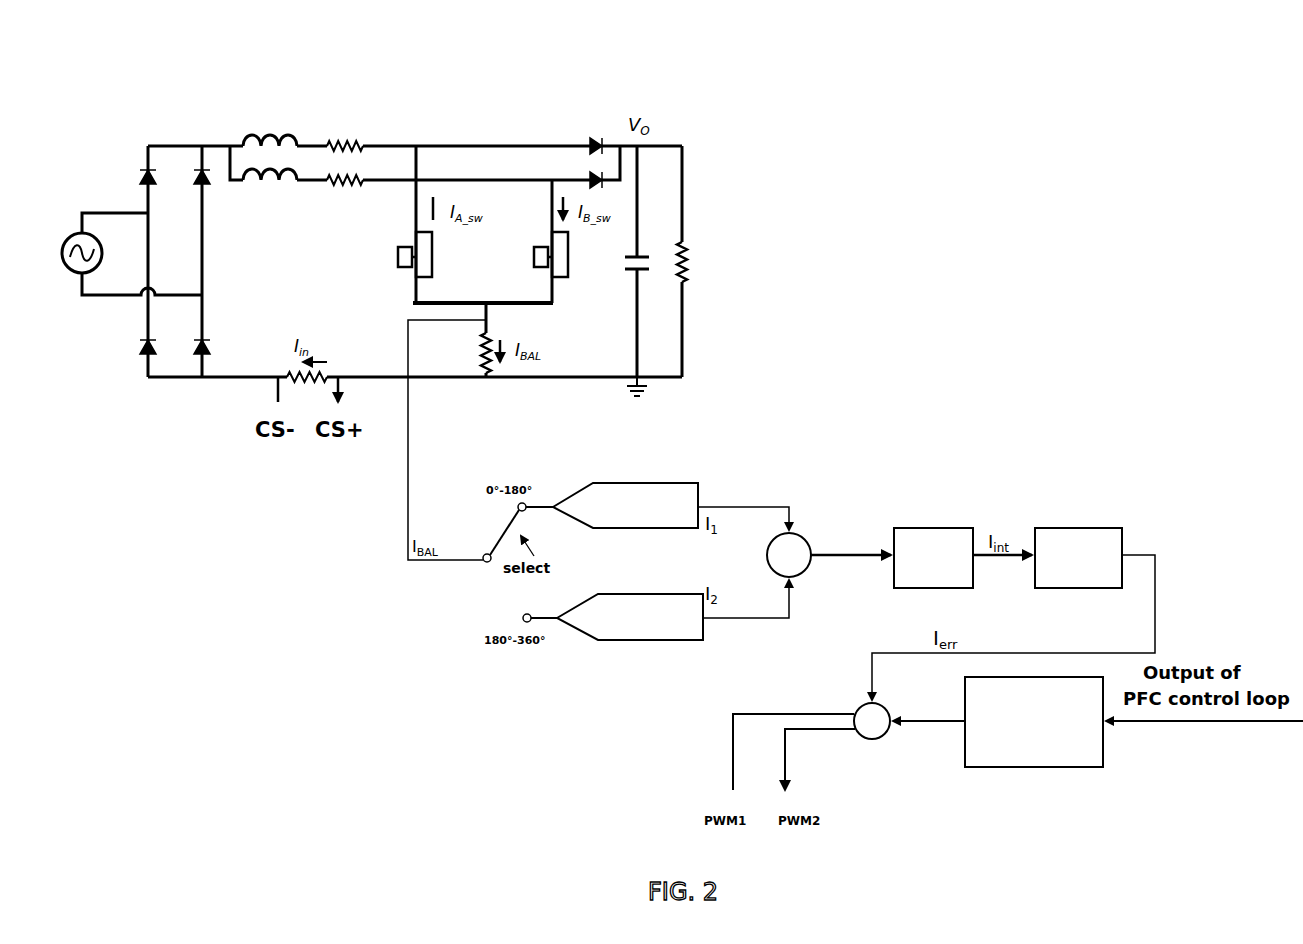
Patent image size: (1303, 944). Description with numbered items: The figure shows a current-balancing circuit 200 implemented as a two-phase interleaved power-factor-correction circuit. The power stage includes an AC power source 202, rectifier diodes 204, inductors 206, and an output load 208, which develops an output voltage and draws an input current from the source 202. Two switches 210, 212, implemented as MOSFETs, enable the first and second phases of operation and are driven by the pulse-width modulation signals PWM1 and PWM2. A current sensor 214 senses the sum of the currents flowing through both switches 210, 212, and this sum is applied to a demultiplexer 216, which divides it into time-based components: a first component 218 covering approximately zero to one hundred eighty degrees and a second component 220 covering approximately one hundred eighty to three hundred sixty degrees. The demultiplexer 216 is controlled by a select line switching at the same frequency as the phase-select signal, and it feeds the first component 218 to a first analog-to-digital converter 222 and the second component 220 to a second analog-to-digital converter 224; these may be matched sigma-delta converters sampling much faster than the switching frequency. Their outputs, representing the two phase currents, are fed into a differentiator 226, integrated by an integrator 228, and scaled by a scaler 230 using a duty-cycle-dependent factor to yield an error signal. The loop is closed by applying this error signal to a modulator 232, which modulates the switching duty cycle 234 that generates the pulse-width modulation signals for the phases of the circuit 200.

The current-balancing circuit 200 is at (997, 157).
The AC power source 202 is at (76, 235).
The rectifier diodes 204 is at (205, 170).
The inductors 206 is at (284, 165).
The output load 208 is at (690, 263).
The first switch 210 is at (402, 248).
The second switch 212 is at (558, 282).
The current sensor 214 is at (490, 378).
The demultiplexer 216 is at (487, 565).
The first component 218 is at (537, 506).
The second component 220 is at (547, 622).
The first analog-to-digital converter 222 is at (687, 483).
The second analog-to-digital converter 224 is at (665, 641).
The differentiator 226 is at (792, 532).
The integrator 228 is at (939, 528).
The scaler 230 is at (1080, 528).
The modulator 232 is at (873, 740).
The switching duty cycle 234 is at (1043, 767).